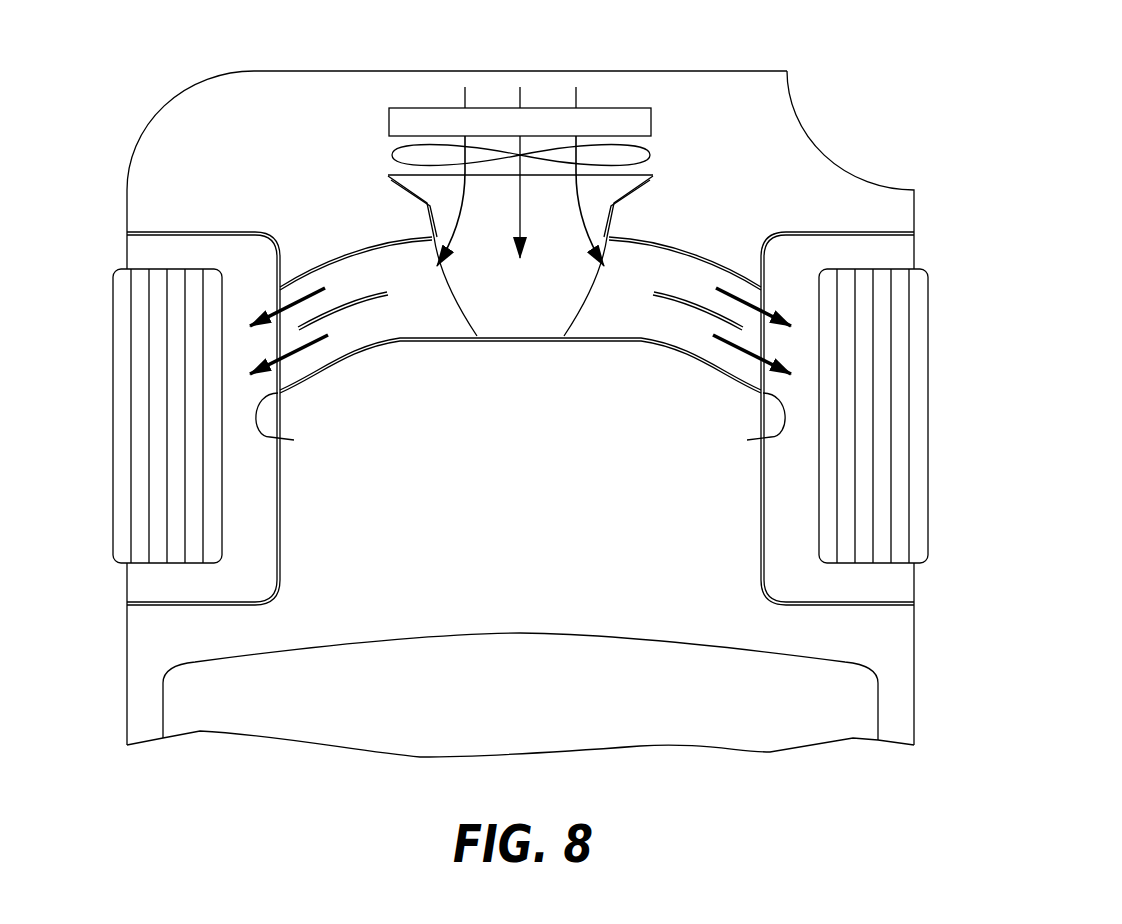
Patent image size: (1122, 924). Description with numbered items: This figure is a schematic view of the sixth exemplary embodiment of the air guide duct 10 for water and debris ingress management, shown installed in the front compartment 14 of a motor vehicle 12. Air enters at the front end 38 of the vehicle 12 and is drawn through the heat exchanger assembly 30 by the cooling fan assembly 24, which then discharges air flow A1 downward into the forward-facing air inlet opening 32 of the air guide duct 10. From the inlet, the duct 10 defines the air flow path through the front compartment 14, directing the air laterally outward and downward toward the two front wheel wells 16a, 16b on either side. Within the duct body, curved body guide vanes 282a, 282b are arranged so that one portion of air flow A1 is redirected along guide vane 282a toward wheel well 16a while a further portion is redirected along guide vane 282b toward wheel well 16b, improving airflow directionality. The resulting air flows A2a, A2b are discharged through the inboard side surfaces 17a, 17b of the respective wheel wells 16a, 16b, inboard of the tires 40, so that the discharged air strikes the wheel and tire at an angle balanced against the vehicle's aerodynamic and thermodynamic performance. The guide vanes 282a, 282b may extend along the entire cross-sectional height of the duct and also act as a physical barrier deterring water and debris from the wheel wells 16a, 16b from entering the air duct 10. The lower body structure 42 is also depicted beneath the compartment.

The air guide duct 10 is at (523, 339).
The motor vehicle 12 is at (865, 60).
The front compartment 14 is at (532, 531).
The wheel well 16a is at (150, 585).
The wheel well 16b is at (893, 583).
The inboard side surface 17a is at (300, 424).
The inboard side surface 17b is at (746, 424).
The cooling fan assembly 24 is at (636, 156).
The heat exchanger assembly 30 is at (651, 125).
The air inlet opening 32 is at (390, 178).
The front end 38 is at (351, 71).
The tire 40 is at (143, 348).
The bottom base 42 is at (705, 723).
The body guide vane 282a is at (345, 308).
The body guide vane 282b is at (688, 303).
The discharge air flow A1 is at (520, 201).
The air flow A2a is at (315, 322).
The air flow A2b is at (735, 322).